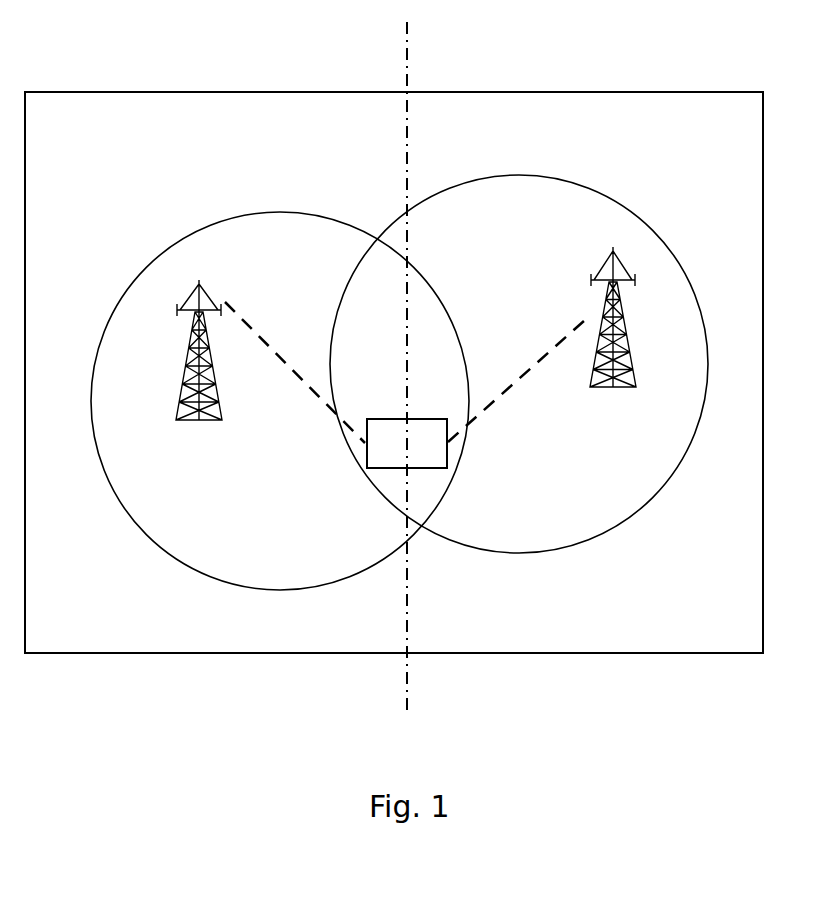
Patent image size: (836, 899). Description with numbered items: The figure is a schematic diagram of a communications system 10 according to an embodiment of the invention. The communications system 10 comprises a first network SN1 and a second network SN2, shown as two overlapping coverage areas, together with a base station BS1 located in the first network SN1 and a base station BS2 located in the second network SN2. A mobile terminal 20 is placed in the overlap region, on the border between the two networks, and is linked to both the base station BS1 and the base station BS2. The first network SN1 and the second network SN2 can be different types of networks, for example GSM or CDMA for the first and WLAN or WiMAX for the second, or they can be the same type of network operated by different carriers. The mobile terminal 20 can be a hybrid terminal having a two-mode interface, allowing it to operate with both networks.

The communications system 10 is at (468, 88).
The mobile terminal 20 is at (406, 418).
The first network SN1 is at (220, 138).
The second network SN2 is at (507, 140).
The base station in the first network BS1 is at (199, 365).
The base station in the second network BS2 is at (613, 334).